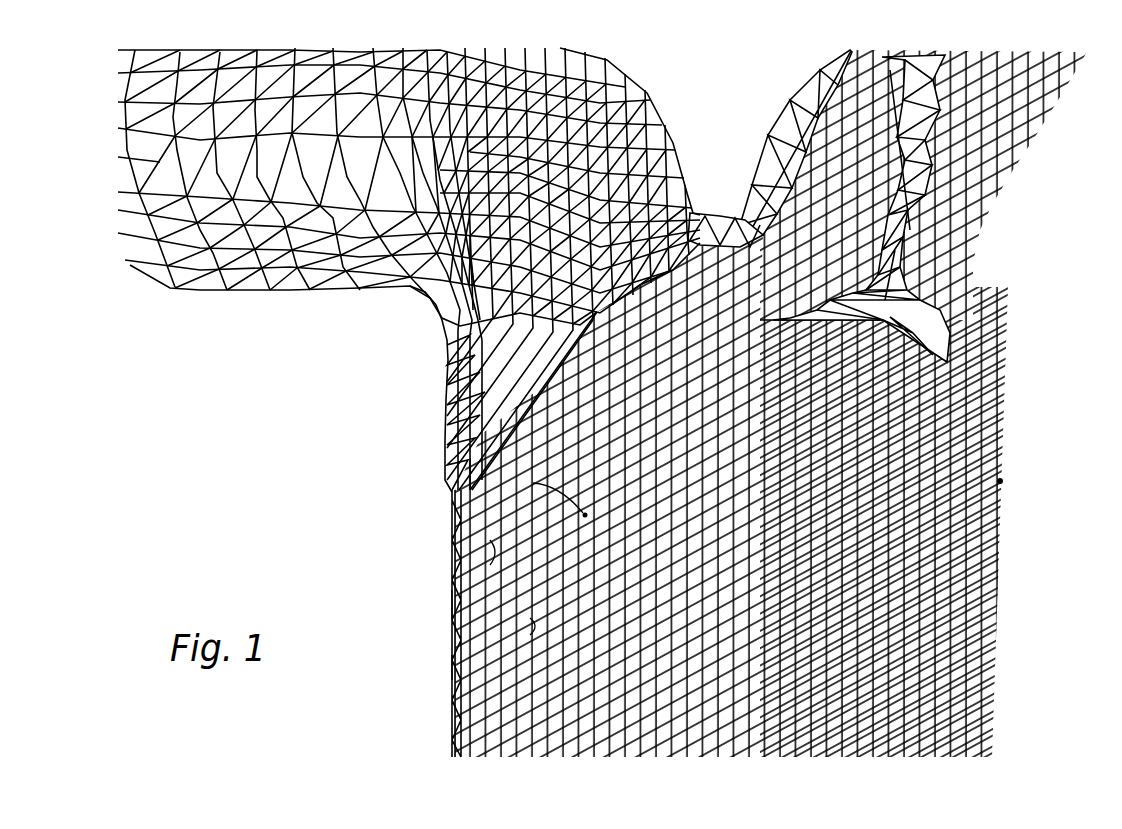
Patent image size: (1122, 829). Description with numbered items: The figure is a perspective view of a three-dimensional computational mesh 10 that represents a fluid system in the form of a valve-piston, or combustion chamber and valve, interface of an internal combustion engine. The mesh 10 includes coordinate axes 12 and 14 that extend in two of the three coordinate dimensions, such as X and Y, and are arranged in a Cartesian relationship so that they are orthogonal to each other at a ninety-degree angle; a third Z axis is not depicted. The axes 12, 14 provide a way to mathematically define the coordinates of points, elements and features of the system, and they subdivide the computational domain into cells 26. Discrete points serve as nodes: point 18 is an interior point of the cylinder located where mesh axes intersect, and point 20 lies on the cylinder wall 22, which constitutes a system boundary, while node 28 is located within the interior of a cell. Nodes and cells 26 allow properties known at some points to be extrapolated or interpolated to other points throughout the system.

The computational mesh 10 is at (331, 396).
The coordinate axis 12 is at (455, 605).
The coordinate axis 14 is at (455, 557).
The point 18 is at (452, 500).
The point 20 is at (1001, 481).
The cylinder wall 22 is at (1003, 410).
The cells 26 is at (455, 640).
The node 28 is at (455, 666).